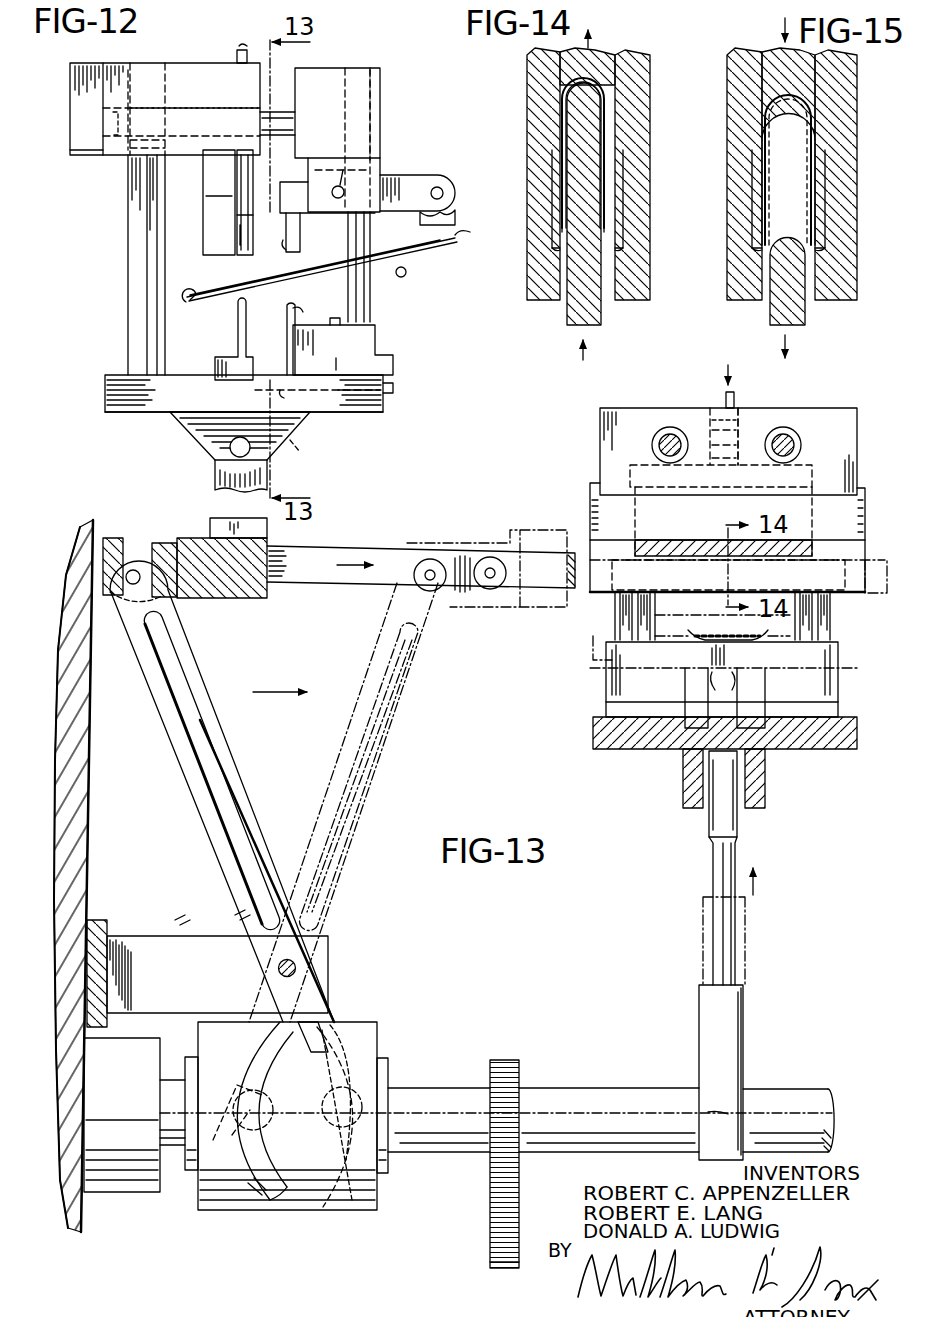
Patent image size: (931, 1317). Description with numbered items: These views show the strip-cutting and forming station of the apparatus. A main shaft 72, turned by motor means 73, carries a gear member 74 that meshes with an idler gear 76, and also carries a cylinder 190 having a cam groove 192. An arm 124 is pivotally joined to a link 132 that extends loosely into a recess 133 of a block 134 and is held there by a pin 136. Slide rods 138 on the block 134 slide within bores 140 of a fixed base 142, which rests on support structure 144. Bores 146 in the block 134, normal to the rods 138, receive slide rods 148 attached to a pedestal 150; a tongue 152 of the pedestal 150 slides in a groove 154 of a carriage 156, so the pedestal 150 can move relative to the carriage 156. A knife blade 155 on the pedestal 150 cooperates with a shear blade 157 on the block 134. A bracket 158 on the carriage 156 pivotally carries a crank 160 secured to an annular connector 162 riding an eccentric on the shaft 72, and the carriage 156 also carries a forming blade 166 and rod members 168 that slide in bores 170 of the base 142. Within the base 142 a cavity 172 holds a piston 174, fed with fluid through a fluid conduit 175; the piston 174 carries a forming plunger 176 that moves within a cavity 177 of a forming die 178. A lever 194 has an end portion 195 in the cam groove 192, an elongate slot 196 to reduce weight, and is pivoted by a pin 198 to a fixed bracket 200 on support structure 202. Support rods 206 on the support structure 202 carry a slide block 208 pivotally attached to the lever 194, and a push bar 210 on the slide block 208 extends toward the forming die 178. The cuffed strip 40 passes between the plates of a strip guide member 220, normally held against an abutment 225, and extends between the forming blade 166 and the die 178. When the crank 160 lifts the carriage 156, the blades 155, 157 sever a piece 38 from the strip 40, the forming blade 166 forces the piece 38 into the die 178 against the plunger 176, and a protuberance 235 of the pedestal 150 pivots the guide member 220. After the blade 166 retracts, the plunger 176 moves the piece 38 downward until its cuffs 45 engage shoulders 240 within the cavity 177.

In FIG. 14, the piece 38 is at (622, 100).
In FIG. 15, the piece 38 is at (818, 110).
In FIG. 13, the piece 38 is at (688, 574).
In FIG. 12, the strip 40 is at (182, 311).
In FIG. 13, the strip 40 is at (720, 640).
In FIG. 14, the cuffs 45 is at (556, 125).
In FIG. 15, the cuffs 45 is at (765, 135).
In FIG. 13, the cuffs 45 is at (755, 575).
In FIG. 13, the main shaft 72 is at (165, 1097).
In FIG. 13, the motor means 73 is at (122, 1180).
In FIG. 13, the gear member 74 is at (505, 1060).
In FIG. 13, the idler gear 76 is at (490, 1218).
In FIG. 12, the arm 124 is at (458, 215).
In FIG. 12, the link 132 is at (406, 178).
In FIG. 12, the recess 133 is at (320, 158).
In FIG. 12, the block 134 is at (330, 70).
In FIG. 12, the pin 136 is at (327, 212).
In FIG. 12, the slide rods 138 is at (226, 110).
In FIG. 13, the slide rods 138 is at (660, 445).
In FIG. 12, the bore 140 is at (105, 124).
In FIG. 12, the fixed base 142 is at (183, 63).
In FIG. 13, the fixed base 142 is at (632, 396).
In FIG. 12, the support structure 144 is at (80, 148).
In FIG. 12, the bores 146 is at (366, 87).
In FIG. 12, the slide rod 148 is at (372, 306).
In FIG. 12, the pedestal 150 is at (388, 358).
In FIG. 12, the tongue 152 is at (395, 388).
In FIG. 12, the groove 154 is at (317, 440).
In FIG. 12, the knife blade 155 is at (311, 327).
In FIG. 12, the carriage 156 is at (385, 413).
In FIG. 13, the carriage 156 is at (600, 660).
In FIG. 12, the shear blade 157 is at (290, 243).
In FIG. 12, the bracket 158 is at (178, 424).
In FIG. 13, the bracket 158 is at (683, 770).
In FIG. 12, the crank 160 is at (215, 472).
In FIG. 13, the crank 160 is at (717, 875).
In FIG. 13, the annular connector 162 is at (703, 968).
In FIG. 12, the forming blade 166 is at (240, 322).
In FIG. 14, the forming blade 166 is at (570, 312).
In FIG. 15, the forming blade 166 is at (772, 312).
In FIG. 13, the forming blade 166 is at (593, 608).
In FIG. 12, the rod members 168 is at (130, 208).
In FIG. 13, the rod members 168 is at (623, 622).
In FIG. 12, the bore 170 is at (157, 63).
In FIG. 13, the cavity 172 is at (746, 420).
In FIG. 13, the piston 174 is at (710, 412).
In FIG. 12, the fluid conduit 175 is at (233, 57).
In FIG. 13, the fluid conduit 175 is at (725, 395).
In FIG. 12, the forming plunger 176 is at (238, 180).
In FIG. 14, the forming plunger 176 is at (603, 62).
In FIG. 15, the forming plunger 176 is at (772, 58).
In FIG. 13, the forming plunger 176 is at (590, 500).
In FIG. 15, the cavity 177 is at (795, 200).
In FIG. 13, the cavity 177 is at (600, 540).
In FIG. 12, the forming die 178 is at (212, 230).
In FIG. 14, the forming die 178 is at (530, 158).
In FIG. 15, the forming die 178 is at (727, 192).
In FIG. 13, the forming die 178 is at (866, 492).
In FIG. 13, the cylinder 190 is at (360, 1020).
In FIG. 13, the cam groove 192 is at (275, 1196).
In FIG. 13, the lever 194 is at (352, 745).
In FIG. 13, the end portion 195 is at (400, 1084).
In FIG. 13, the elongate slot 196 is at (348, 802).
In FIG. 13, the pin 198 is at (297, 964).
In FIG. 13, the fixed bracket 200 is at (170, 936).
In FIG. 13, the support structure 202 is at (78, 758).
In FIG. 13, the support rods 206 is at (124, 548).
In FIG. 13, the slide block 208 is at (242, 600).
In FIG. 13, the push bar 210 is at (372, 541).
In FIG. 12, the strip guide member 220 is at (458, 240).
In FIG. 12, the abutment 225 is at (405, 278).
In FIG. 12, the protuberance 235 is at (343, 350).
In FIG. 14, the shoulders 240 is at (550, 250).
In FIG. 15, the shoulders 240 is at (752, 254).